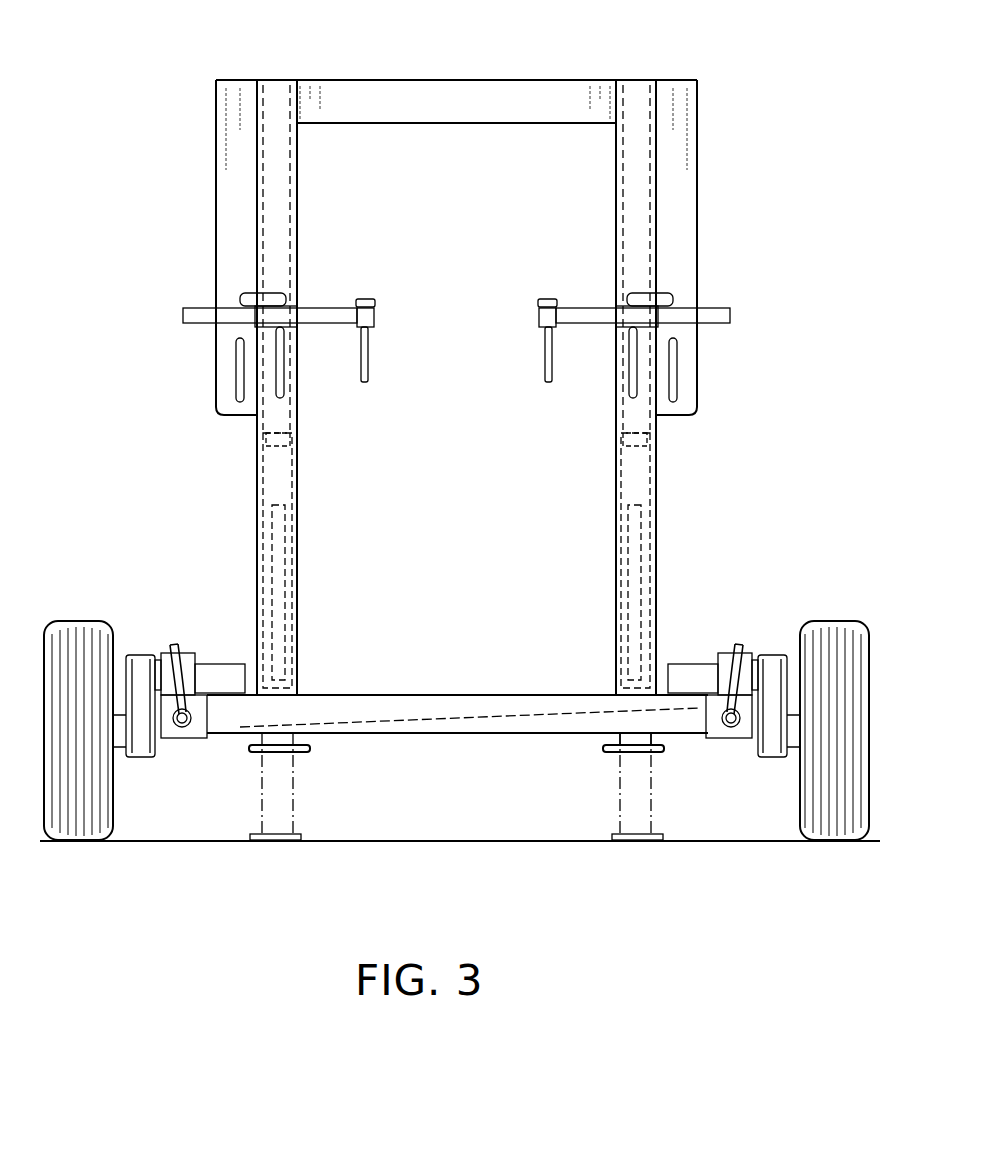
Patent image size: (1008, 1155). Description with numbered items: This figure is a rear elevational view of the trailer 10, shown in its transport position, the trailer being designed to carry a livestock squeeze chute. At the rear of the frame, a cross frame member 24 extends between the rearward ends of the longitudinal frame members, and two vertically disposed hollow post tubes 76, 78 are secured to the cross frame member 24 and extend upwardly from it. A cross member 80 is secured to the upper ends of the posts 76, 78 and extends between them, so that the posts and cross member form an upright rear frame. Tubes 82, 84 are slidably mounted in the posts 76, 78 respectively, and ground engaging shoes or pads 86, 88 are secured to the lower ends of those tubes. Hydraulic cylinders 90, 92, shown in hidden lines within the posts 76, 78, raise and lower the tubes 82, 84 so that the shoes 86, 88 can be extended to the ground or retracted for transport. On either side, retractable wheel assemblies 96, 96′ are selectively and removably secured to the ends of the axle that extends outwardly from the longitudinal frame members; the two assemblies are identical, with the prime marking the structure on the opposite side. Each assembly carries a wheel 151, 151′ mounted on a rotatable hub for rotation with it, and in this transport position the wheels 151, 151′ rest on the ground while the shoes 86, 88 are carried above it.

The trailer 10 is at (763, 205).
The cross frame member 24 is at (534, 630).
The post tube 76 is at (298, 227).
The post tube 78 is at (615, 228).
The cross member 80 is at (465, 85).
The tube 82 is at (282, 737).
The tube 84 is at (647, 737).
The ground engaging shoe 86 is at (310, 748).
The ground engaging shoe 88 is at (607, 748).
The hydraulic cylinder 90 is at (278, 548).
The hydraulic cylinder 92 is at (634, 529).
The retractable wheel assembly 96 is at (193, 638).
The retractable wheel assembly 96′ is at (726, 636).
The wheel 151 is at (66, 650).
The wheel 151′ is at (838, 665).